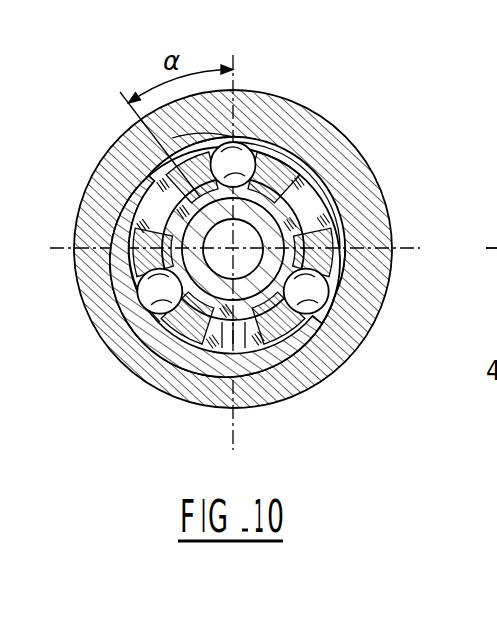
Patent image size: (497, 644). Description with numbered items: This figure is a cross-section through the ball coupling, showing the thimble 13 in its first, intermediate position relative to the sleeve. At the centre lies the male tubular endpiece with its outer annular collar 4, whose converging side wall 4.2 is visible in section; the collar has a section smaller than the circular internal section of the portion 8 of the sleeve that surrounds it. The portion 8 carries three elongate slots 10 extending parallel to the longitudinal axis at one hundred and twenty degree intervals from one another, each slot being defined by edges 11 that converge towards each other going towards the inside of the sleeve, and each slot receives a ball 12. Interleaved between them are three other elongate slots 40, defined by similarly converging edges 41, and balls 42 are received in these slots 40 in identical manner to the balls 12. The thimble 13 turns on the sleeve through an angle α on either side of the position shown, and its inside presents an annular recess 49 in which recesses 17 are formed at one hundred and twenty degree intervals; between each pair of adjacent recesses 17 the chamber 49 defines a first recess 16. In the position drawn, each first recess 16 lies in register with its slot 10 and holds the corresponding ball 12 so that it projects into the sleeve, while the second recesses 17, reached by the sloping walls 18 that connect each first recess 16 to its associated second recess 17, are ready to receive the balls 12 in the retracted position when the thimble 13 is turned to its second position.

The outer annular collar 4 is at (224, 403).
The converging side wall 4.2 is at (281, 397).
The portion of the sleeve 8 is at (172, 138).
The elongate slots 10 is at (268, 142).
The edges 11 is at (357, 280).
The balls 12 is at (120, 352).
The thimble 13 is at (100, 302).
The first recess 16 is at (97, 180).
The recesses 17 is at (180, 398).
The sloping walls 18 is at (150, 375).
The other elongate slots 40 is at (312, 190).
The edges 41 is at (307, 202).
The balls 42 is at (482, 207).
The annular recess 49 is at (104, 172).